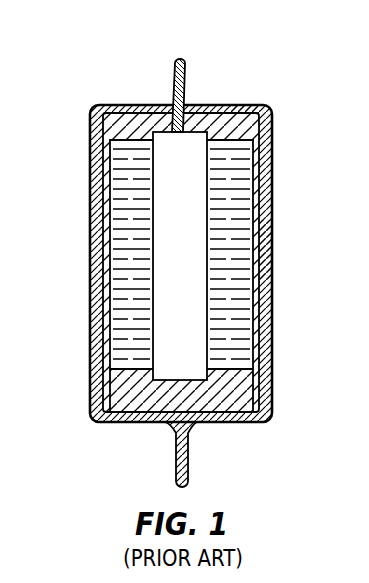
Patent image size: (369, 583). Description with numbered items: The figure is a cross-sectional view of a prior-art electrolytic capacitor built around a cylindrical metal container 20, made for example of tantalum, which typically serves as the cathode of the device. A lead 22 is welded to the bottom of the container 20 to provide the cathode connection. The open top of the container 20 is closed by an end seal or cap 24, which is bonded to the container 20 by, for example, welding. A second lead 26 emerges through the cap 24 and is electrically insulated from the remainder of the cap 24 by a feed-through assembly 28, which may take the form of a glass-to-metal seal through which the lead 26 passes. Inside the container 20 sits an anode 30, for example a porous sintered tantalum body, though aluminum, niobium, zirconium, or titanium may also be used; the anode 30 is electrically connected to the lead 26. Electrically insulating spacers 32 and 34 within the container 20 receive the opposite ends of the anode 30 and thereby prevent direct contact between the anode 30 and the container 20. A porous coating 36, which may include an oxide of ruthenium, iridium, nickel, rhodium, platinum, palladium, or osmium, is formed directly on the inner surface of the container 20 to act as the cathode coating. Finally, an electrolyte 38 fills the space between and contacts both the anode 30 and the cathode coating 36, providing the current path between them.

The cylindrical metal container 20 is at (272, 292).
The lead 22 is at (188, 472).
The cap 24 is at (272, 112).
The second lead 26 is at (168, 97).
The feed-through assembly 28 is at (183, 100).
The anode 30 is at (185, 200).
The electrically insulating spacer 32 is at (123, 386).
The electrically insulating spacer 34 is at (123, 127).
The porous coating 36 is at (273, 249).
The electrolyte 38 is at (240, 349).